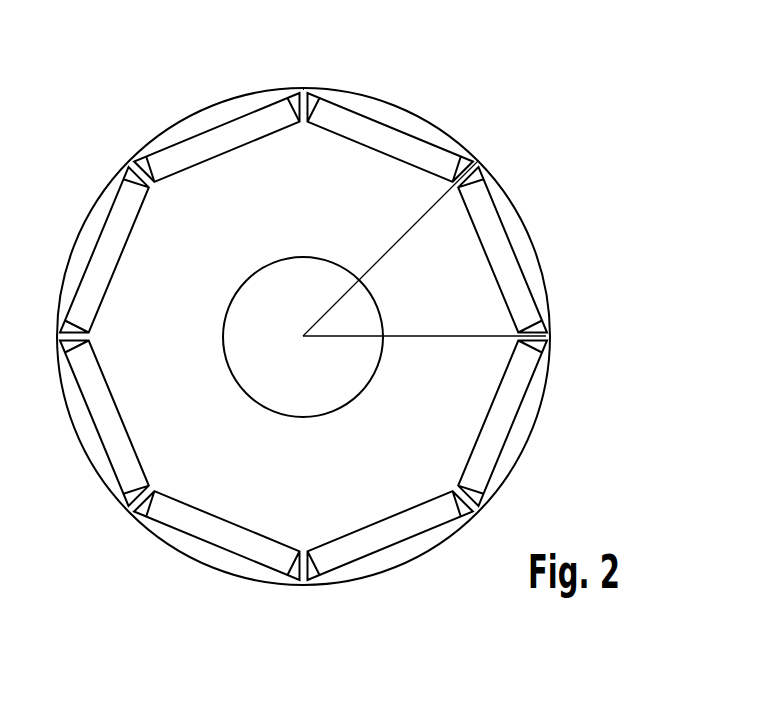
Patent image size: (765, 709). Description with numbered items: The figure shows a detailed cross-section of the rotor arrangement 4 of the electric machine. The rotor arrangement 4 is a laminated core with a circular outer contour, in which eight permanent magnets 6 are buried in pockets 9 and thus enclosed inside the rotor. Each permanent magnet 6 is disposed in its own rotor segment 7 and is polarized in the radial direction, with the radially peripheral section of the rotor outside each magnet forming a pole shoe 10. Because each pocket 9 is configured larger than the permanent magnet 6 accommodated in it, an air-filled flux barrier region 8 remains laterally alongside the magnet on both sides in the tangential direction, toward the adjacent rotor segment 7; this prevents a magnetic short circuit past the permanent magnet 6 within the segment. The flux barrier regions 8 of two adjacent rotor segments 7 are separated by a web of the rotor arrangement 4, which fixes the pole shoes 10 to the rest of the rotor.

The rotor arrangement 4 is at (437, 123).
The permanent magnet 6 is at (502, 245).
The rotor segment 7 is at (485, 332).
The flux barrier region 8 is at (310, 85).
The pocket 9 is at (491, 167).
The pole shoe 10 is at (202, 120).